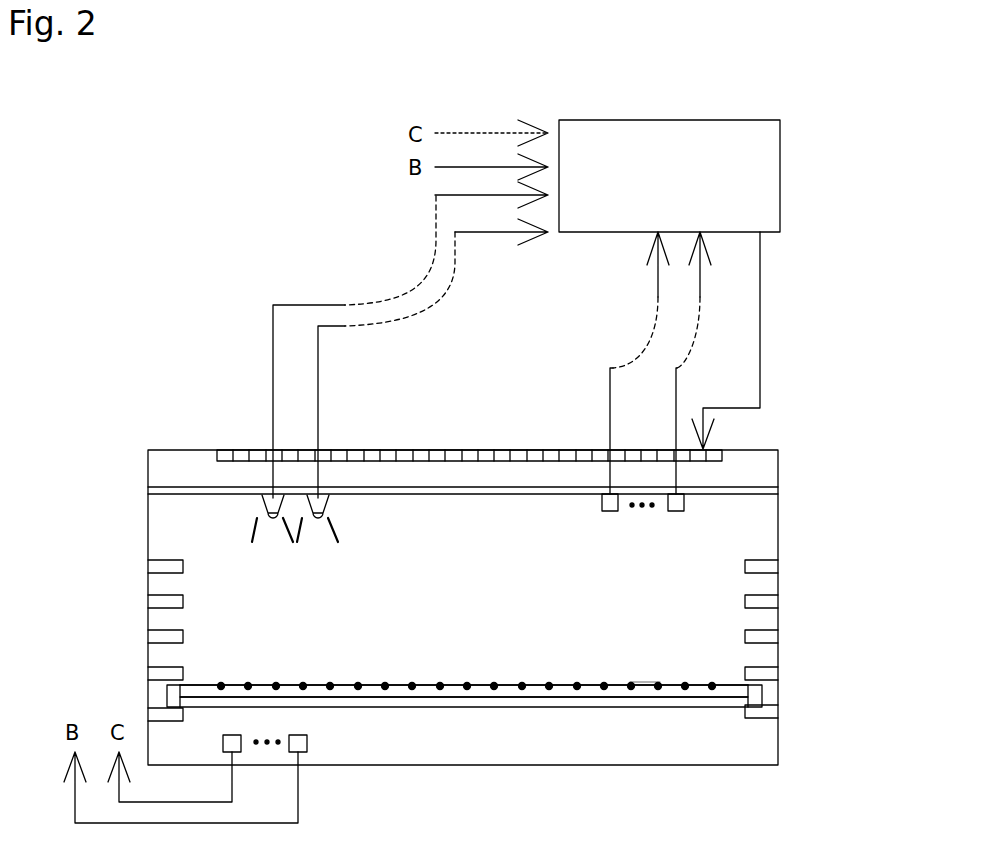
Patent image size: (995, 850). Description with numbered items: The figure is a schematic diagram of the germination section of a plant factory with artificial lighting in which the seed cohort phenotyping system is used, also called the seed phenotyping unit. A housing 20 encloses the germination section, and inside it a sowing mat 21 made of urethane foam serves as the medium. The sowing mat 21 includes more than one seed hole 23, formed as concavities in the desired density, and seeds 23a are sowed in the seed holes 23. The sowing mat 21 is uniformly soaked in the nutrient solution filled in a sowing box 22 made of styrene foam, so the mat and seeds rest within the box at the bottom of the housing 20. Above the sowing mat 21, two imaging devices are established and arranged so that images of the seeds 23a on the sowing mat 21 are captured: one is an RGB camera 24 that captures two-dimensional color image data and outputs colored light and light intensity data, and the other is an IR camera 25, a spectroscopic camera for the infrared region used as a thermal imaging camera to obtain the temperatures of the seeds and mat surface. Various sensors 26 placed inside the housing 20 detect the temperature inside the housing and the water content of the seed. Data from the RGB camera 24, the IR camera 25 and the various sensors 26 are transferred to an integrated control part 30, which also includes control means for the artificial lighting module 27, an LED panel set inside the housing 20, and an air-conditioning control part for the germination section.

The housing 20 is at (148, 470).
The sowing mat 21 is at (646, 684).
The sowing box 22 is at (493, 707).
The seed hole 23 is at (604, 690).
The seeds 23a is at (605, 684).
The RGB camera 24 is at (262, 503).
The IR camera 25 is at (330, 505).
The various sensors 26 is at (684, 508).
The artificial lighting module 27 is at (497, 452).
The integrated control part 30 is at (738, 136).